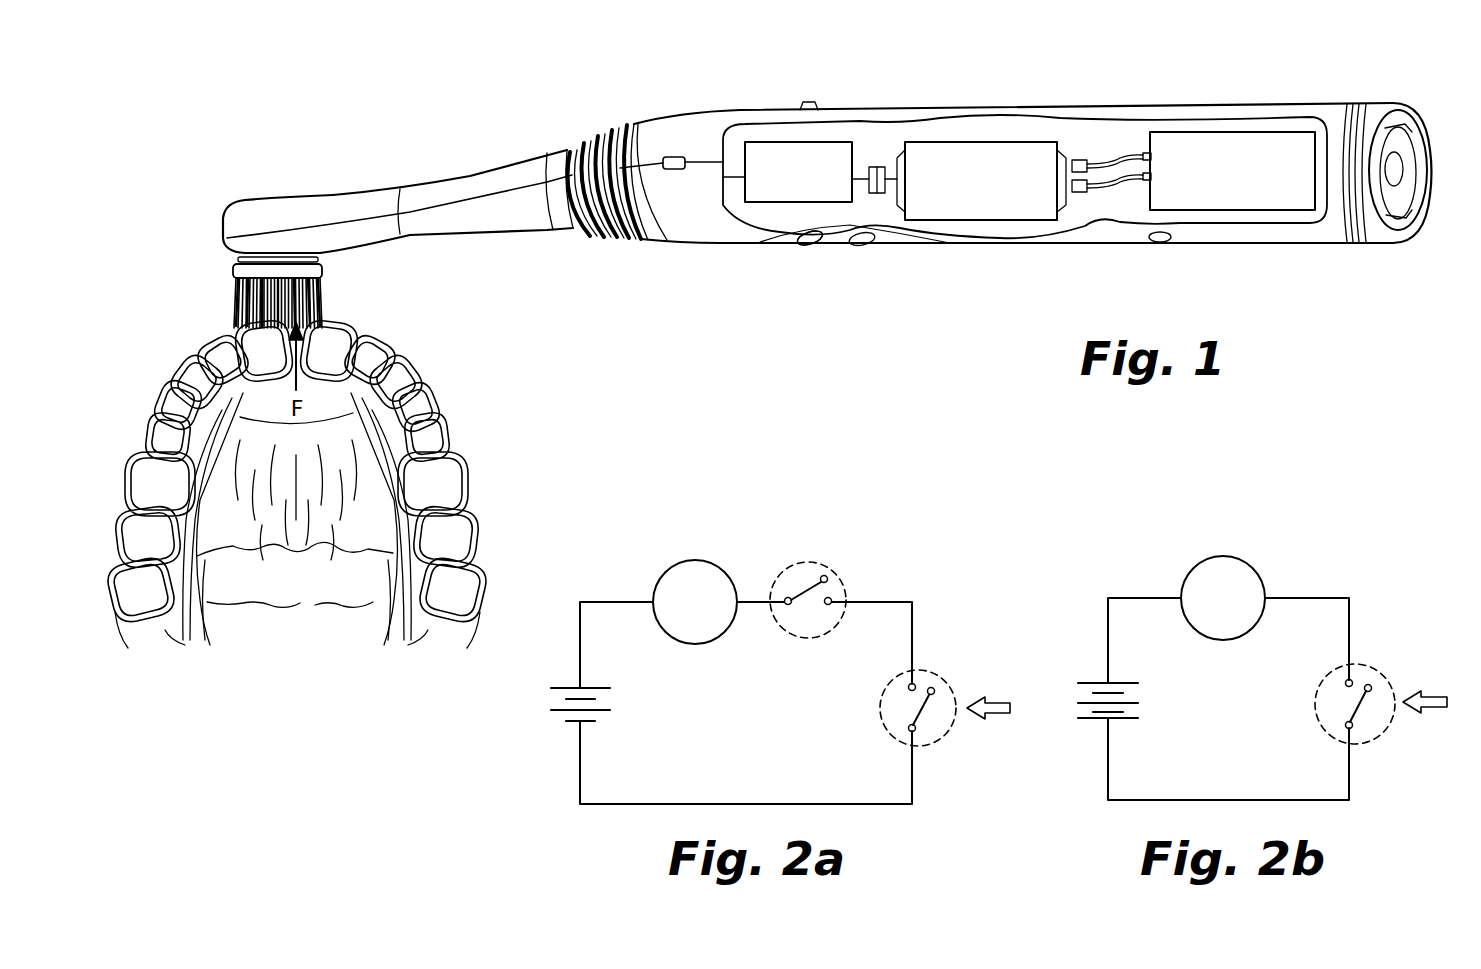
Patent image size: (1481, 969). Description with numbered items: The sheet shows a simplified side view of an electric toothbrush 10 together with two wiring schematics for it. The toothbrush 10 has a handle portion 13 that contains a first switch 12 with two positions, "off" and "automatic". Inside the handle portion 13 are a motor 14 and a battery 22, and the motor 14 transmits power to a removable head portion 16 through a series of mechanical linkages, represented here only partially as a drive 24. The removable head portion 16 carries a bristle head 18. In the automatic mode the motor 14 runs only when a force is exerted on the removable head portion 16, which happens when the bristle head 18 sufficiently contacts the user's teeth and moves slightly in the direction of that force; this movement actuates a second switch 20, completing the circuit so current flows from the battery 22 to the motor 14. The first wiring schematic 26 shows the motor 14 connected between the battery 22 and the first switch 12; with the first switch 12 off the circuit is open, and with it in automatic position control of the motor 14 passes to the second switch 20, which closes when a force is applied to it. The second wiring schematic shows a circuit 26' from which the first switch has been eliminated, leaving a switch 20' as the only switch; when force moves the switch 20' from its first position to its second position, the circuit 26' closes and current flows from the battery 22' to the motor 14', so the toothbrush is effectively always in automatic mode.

In FIG. 1, the electric toothbrush 10 is at (673, 80).
In FIG. 1, the first switch 12 is at (862, 257).
In FIG. 2A, the first switch 12 is at (810, 560).
In FIG. 1, the handle portion 13 is at (1189, 79).
In FIG. 1, the motor 14 is at (1024, 131).
In FIG. 2A, the motor 14 is at (709, 576).
In FIG. 1, the removable head portion 16 is at (445, 141).
In FIG. 1, the bristle head 18 is at (233, 274).
In FIG. 1, the second switch 20 is at (678, 220).
In FIG. 2A, the second switch 20 is at (953, 678).
In FIG. 1, the battery 22 is at (1241, 126).
In FIG. 2A, the battery 22 is at (606, 678).
In FIG. 1, the drive 24 is at (829, 142).
In FIG. 2A, the wiring schematic 26 is at (736, 671).
In FIG. 2B, the motor 14' is at (1244, 571).
In FIG. 2B, the switch 20' is at (1391, 676).
In FIG. 2B, the battery 22' is at (1133, 674).
In FIG. 2B, the circuit 26' is at (1217, 666).